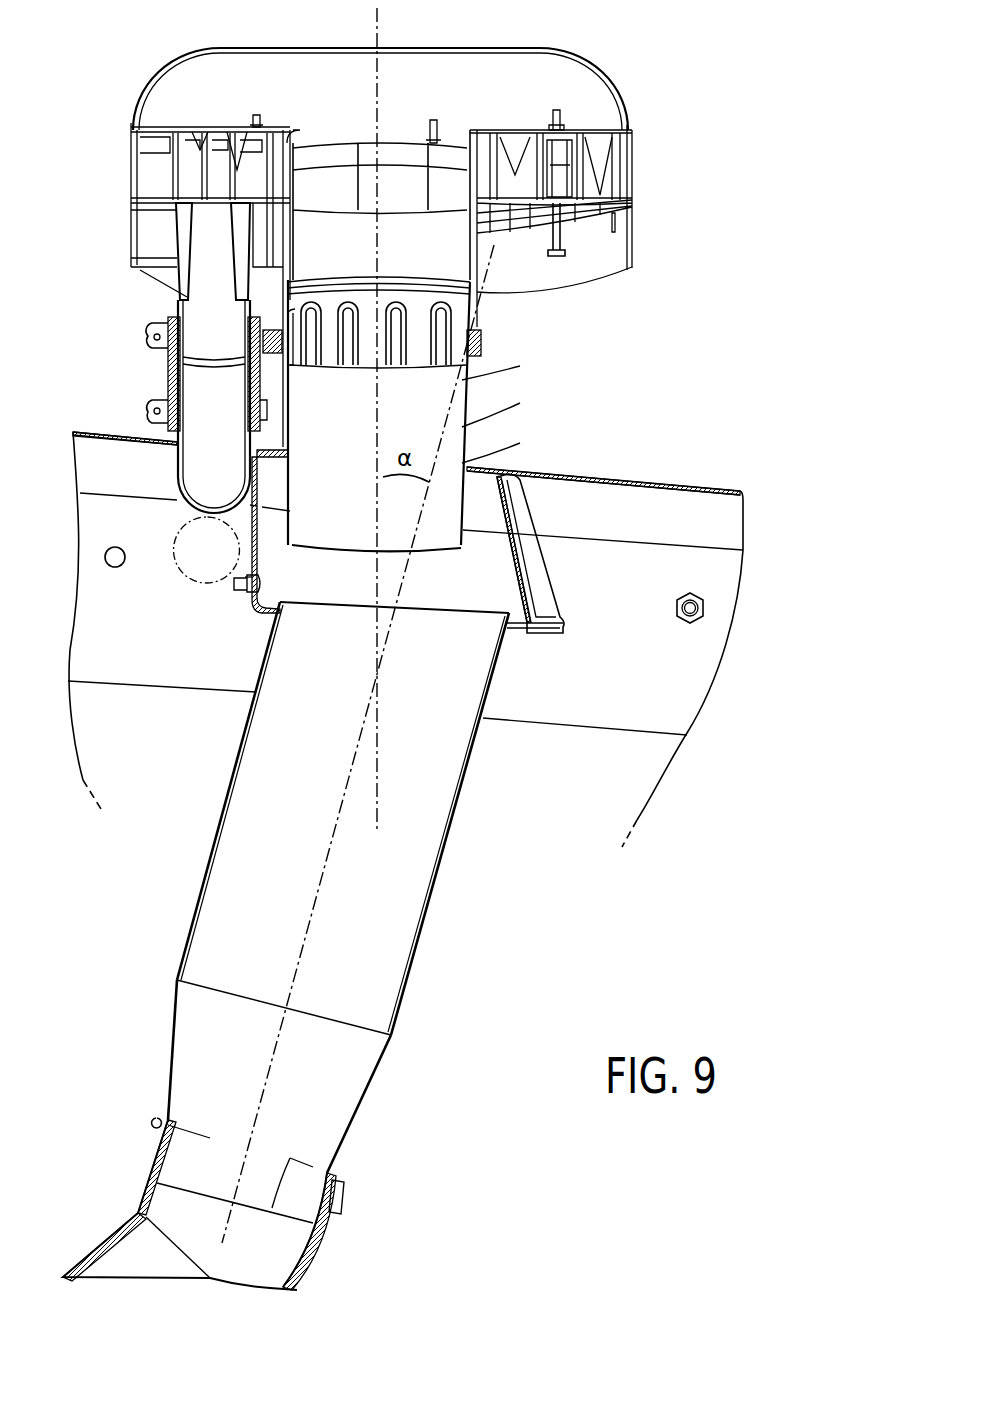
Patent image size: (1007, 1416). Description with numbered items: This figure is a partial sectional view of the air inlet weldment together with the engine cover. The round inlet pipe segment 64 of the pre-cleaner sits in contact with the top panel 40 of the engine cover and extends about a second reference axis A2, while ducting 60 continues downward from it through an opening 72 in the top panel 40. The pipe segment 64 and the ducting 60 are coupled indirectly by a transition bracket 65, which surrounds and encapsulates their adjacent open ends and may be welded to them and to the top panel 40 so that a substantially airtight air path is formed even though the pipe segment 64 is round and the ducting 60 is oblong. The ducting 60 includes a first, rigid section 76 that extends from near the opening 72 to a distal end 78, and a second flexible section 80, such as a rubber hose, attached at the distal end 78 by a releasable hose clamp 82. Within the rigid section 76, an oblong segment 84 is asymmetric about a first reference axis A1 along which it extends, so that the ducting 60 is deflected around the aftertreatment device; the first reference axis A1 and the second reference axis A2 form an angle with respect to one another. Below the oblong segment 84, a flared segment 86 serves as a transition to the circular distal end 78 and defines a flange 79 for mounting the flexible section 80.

The top panel 40 is at (613, 477).
The ducting 60 is at (463, 783).
The inlet pipe segment 64 is at (472, 385).
The transition bracket 65 is at (527, 580).
The opening 72 is at (473, 460).
The rigid section 76 is at (430, 897).
The distal end 78 is at (272, 1208).
The flange 79 is at (168, 1120).
The flexible section 80 is at (308, 1270).
The hose clamp 82 is at (338, 1198).
The oblong segment 84 is at (215, 847).
The flared segment 86 is at (365, 1095).
The reference axis A1 is at (380, 33).
The second reference axis A2 is at (470, 423).